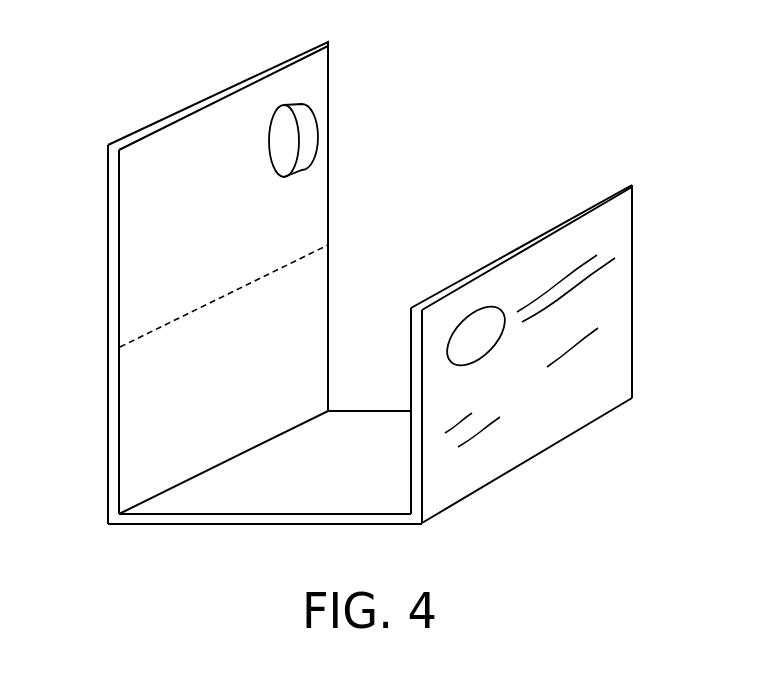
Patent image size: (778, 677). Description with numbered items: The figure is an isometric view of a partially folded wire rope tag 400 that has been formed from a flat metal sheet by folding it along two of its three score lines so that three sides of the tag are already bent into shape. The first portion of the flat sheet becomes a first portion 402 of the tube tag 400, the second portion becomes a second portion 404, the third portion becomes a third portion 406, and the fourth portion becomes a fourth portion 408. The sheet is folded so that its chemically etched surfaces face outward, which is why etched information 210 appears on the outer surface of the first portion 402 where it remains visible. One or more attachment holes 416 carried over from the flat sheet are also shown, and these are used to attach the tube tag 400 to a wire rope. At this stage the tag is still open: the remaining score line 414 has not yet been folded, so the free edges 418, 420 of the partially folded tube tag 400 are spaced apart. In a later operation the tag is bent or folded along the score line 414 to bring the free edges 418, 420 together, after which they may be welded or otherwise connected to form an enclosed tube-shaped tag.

The partially folded wire rope tag 400 is at (562, 88).
The first portion of the tube tag 402 is at (562, 410).
The second portion of the tube tag 404 is at (250, 526).
The third portion of the tube tag 406 is at (116, 395).
The fourth portion of the tube tag 408 is at (116, 216).
The score line 414 is at (328, 246).
The attachment hole 416 is at (322, 138).
The free edge 418 is at (237, 82).
The free edge 420 is at (628, 184).
The etched information 210 is at (644, 346).